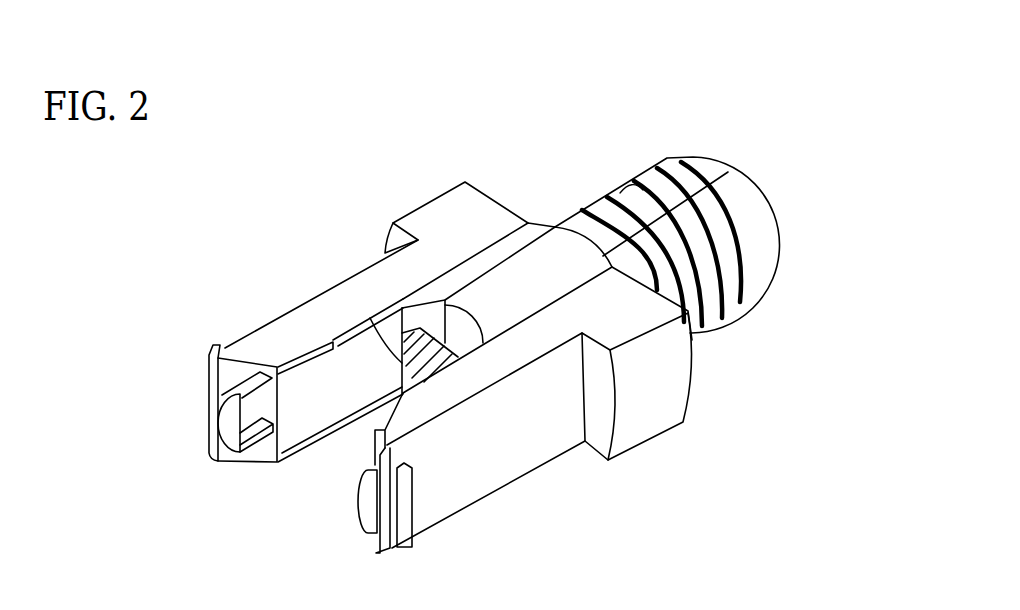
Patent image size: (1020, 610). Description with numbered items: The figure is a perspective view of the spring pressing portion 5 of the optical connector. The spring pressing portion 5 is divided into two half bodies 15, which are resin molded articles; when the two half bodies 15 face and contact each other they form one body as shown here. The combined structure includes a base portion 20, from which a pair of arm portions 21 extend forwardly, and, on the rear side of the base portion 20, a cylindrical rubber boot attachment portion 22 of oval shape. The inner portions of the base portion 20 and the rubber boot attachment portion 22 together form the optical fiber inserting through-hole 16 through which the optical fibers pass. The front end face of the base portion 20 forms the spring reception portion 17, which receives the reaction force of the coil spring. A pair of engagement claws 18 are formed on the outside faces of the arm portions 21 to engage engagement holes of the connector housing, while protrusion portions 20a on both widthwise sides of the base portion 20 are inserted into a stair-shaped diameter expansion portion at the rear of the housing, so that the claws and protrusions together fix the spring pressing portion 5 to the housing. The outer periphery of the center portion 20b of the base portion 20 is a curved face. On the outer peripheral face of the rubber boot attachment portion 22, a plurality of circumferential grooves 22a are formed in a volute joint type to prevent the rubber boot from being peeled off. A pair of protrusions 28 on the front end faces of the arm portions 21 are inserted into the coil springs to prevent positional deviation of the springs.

The spring pressing portion 5 is at (492, 110).
The half body 15 is at (445, 203).
The optical fiber inserting through-hole 16 is at (413, 350).
The spring reception portion 17 is at (466, 316).
The engagement claw 18 is at (215, 346).
The base portion 20 is at (528, 222).
The protrusion portion 20a is at (393, 223).
The center portion 20b is at (475, 265).
The arm portion 21 is at (265, 322).
The rubber boot attachment portion 22 is at (697, 170).
The circumferential groove 22a is at (618, 192).
The protrusion 28 is at (228, 432).